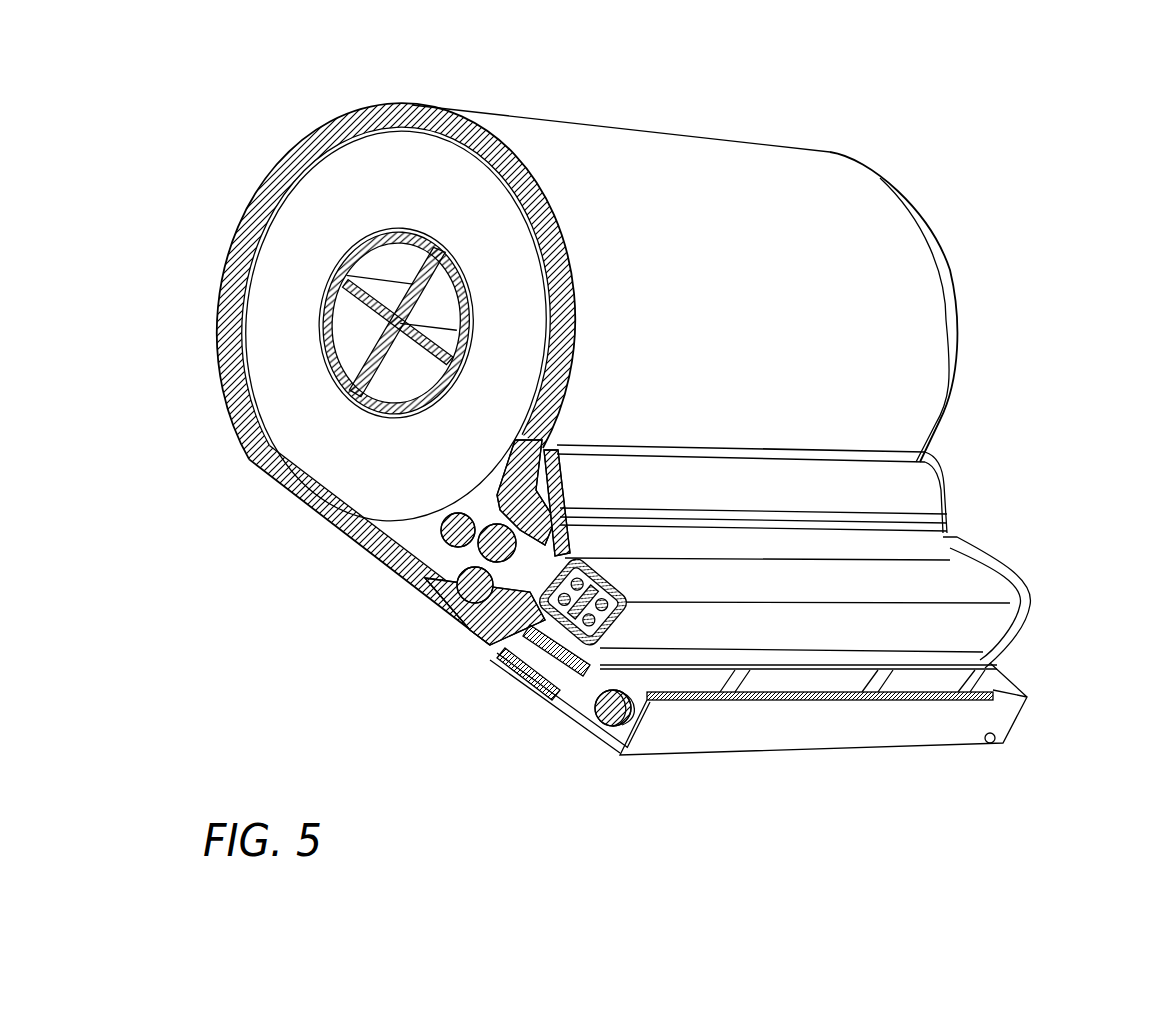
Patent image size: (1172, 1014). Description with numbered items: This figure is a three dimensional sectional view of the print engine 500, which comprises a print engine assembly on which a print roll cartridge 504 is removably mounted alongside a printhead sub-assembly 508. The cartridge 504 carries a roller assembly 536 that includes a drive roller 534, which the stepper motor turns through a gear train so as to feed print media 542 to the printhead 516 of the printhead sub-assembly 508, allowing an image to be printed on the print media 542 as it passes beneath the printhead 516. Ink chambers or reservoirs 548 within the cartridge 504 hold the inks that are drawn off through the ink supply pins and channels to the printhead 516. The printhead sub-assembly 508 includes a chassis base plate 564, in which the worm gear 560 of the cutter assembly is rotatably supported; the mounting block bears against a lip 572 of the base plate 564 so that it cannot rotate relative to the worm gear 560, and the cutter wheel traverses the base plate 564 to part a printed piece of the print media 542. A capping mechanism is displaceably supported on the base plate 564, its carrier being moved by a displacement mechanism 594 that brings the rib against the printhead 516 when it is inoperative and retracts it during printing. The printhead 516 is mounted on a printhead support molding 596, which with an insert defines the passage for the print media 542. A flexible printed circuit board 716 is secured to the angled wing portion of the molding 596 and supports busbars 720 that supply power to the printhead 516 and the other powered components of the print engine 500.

The print engine 500 is at (1052, 283).
The print roll cartridge 504 is at (742, 133).
The printhead sub-assembly 508 is at (779, 632).
The printhead 516 is at (492, 650).
The drive roller 534 is at (433, 572).
The roller assembly 536 is at (400, 538).
The print media 542 is at (995, 661).
The ink reservoirs 548 is at (372, 270).
The worm gear 560 is at (603, 714).
The chassis base plate 564 is at (814, 764).
The lip 572 is at (1003, 723).
The displacement mechanism 594 is at (548, 682).
The printhead support molding 596 is at (1012, 573).
The flexible printed circuit board 716 is at (928, 480).
The busbars 720 is at (955, 524).